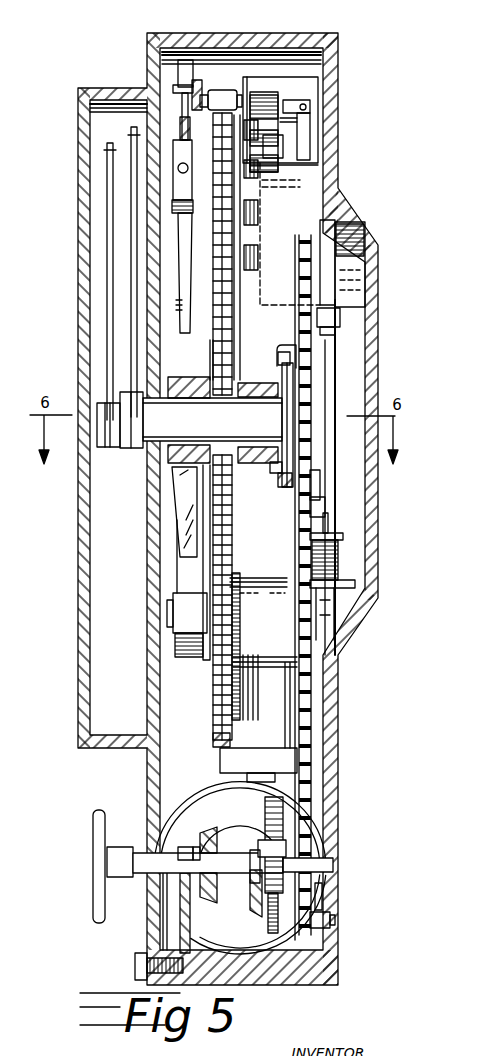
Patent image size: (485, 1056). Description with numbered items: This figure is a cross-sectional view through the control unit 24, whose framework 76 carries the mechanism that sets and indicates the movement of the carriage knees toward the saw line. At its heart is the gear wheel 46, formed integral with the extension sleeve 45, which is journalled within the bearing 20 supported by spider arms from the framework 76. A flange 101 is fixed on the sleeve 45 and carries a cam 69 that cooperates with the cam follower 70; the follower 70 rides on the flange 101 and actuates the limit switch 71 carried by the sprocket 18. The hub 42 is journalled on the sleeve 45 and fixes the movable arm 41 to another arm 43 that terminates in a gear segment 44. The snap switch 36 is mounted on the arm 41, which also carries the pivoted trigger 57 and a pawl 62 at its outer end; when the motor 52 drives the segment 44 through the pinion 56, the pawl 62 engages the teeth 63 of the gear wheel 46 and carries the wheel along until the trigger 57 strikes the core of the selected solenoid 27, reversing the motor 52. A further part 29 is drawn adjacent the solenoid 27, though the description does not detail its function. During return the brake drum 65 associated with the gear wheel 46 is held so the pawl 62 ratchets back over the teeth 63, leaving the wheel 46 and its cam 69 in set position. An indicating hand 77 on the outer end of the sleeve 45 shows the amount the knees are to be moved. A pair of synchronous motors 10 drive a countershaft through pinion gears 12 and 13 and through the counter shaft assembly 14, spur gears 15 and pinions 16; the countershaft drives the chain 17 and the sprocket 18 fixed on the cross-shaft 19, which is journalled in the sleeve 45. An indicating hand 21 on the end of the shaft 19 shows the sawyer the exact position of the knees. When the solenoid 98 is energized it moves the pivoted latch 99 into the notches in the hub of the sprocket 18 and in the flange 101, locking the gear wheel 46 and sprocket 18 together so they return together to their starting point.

The synchronous motors 10 is at (208, 813).
The pinion gear 12 is at (160, 948).
The pinion gear 13 is at (212, 838).
The counter shaft assembly 14 is at (157, 864).
The spur gears 15 is at (292, 812).
The pinions 16 is at (262, 907).
The chain 17 is at (310, 250).
The sprocket 18 is at (303, 412).
The cross-shaft 19 is at (98, 435).
The bearing 20 is at (273, 473).
The indicating hand 21 is at (108, 285).
The control unit 24 is at (328, 117).
The solenoids 27 is at (267, 100).
The block 29 is at (273, 150).
The snap switch 36 is at (178, 192).
The movable arm 41 is at (220, 350).
The hub 42 is at (210, 372).
The arm 43 is at (185, 508).
The gear segment 44 is at (182, 645).
The extension sleeve 45 is at (185, 418).
The gear wheel 46 is at (248, 250).
The motor 52 is at (215, 728).
The pinion 56 is at (172, 618).
The trigger 57 is at (178, 72).
The pawl 62 is at (219, 95).
The teeth 63 is at (222, 297).
The brake drum 65 is at (241, 703).
The cam 69 is at (288, 385).
The cam follower 70 is at (284, 345).
The limit switch 71 is at (341, 318).
The framework 76 is at (262, 462).
The indicating hand 77 is at (132, 180).
The solenoid 98 is at (322, 572).
The latch 99 is at (320, 486).
The flange 101 is at (285, 488).